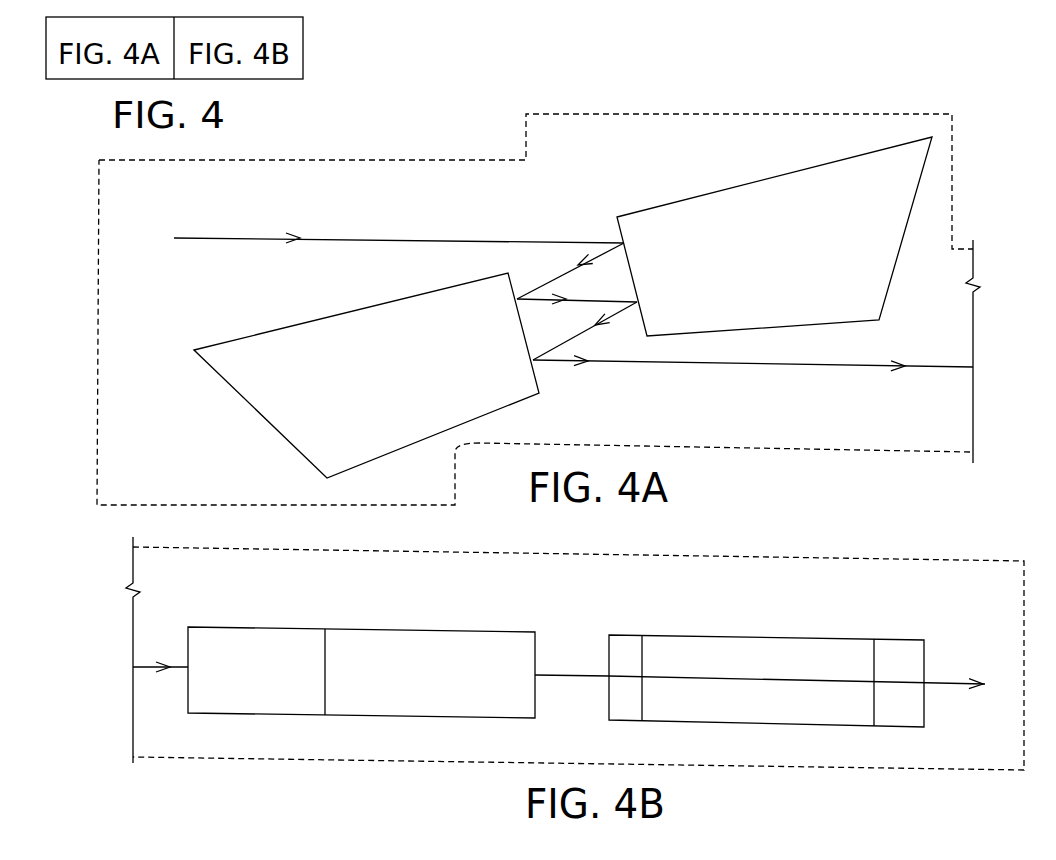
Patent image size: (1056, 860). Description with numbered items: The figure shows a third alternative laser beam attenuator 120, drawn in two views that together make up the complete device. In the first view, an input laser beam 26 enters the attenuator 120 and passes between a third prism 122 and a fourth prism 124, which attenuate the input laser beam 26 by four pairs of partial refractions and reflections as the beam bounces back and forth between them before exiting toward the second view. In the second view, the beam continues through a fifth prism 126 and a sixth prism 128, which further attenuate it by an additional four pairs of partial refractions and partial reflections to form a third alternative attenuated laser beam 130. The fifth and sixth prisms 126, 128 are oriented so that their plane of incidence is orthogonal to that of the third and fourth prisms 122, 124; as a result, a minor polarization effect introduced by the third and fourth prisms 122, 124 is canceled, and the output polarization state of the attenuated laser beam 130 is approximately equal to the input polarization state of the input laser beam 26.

In FIG. 4A, the input laser beam 26 is at (247, 238).
In FIG. 4A, the third alternative laser beam attenuator 120 is at (730, 447).
In FIG. 4B, the third alternative laser beam attenuator 120 is at (857, 558).
In FIG. 4A, the third prism 122 is at (822, 230).
In FIG. 4A, the fourth prism 124 is at (373, 387).
In FIG. 4B, the fifth prism 126 is at (438, 628).
In FIG. 4B, the sixth prism 128 is at (782, 638).
In FIG. 4B, the third alternative attenuated laser beam 130 is at (935, 682).